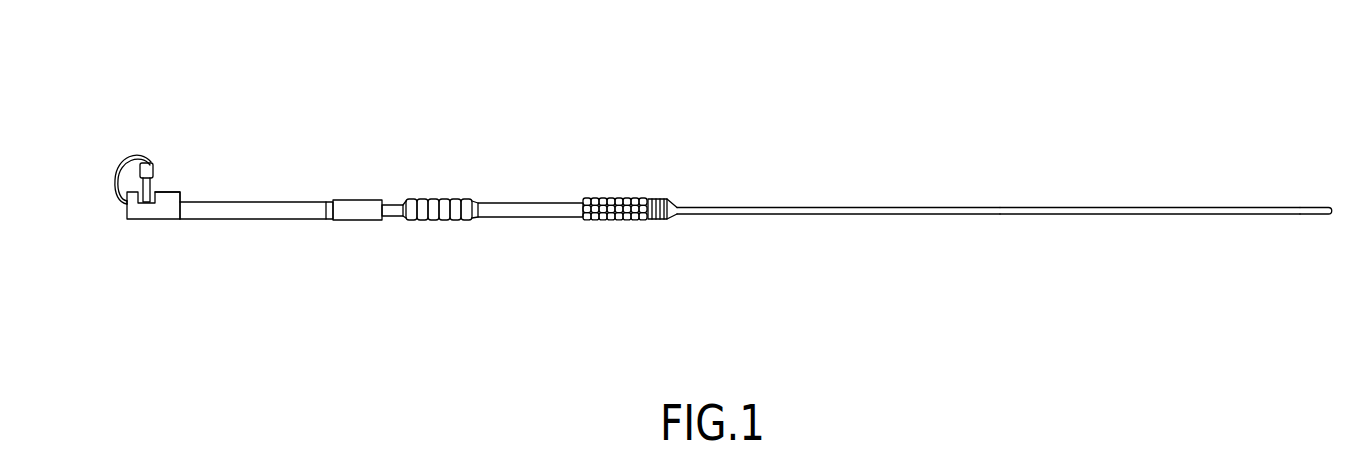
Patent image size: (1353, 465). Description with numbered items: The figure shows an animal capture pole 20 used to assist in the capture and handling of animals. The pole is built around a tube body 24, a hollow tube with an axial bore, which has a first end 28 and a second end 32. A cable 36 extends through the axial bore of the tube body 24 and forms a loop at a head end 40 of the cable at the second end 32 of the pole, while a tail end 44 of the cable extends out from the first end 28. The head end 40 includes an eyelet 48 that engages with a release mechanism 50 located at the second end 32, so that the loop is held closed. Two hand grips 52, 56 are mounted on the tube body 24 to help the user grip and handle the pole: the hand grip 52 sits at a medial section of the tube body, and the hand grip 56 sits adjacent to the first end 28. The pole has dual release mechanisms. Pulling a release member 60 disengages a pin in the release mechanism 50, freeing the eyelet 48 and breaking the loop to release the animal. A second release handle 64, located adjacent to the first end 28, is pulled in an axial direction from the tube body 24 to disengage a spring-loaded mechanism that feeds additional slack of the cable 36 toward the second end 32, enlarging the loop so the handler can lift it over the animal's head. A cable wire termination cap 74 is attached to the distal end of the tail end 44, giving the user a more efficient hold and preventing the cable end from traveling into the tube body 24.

The animal capture pole 20 is at (680, 80).
The tube body 24 is at (578, 222).
The first end 28 is at (676, 201).
The second end 32 is at (155, 228).
The cable 36 is at (915, 203).
The head end 40 is at (131, 150).
The tail end 44 is at (1125, 207).
The eyelet 48 is at (152, 188).
The release mechanism 50 is at (168, 192).
The hand grip 52 is at (433, 198).
The hand grip 56 is at (612, 198).
The release member 60 is at (352, 220).
The second release handle 64 is at (677, 228).
The cable wire termination cap 74 is at (1318, 207).